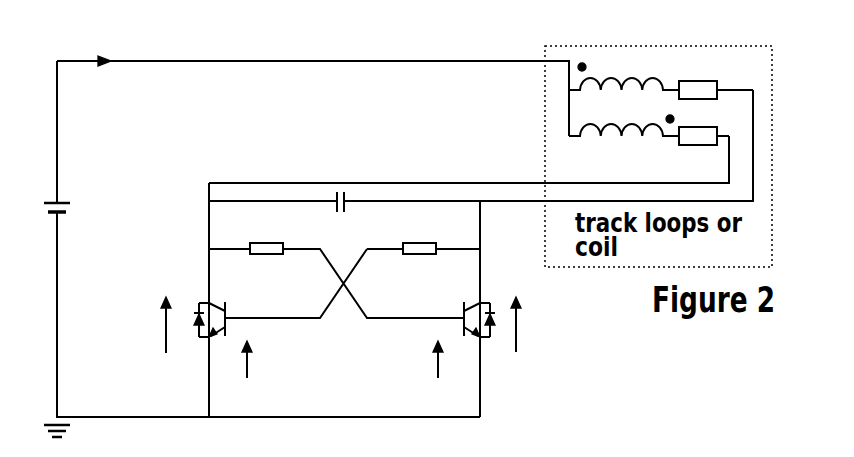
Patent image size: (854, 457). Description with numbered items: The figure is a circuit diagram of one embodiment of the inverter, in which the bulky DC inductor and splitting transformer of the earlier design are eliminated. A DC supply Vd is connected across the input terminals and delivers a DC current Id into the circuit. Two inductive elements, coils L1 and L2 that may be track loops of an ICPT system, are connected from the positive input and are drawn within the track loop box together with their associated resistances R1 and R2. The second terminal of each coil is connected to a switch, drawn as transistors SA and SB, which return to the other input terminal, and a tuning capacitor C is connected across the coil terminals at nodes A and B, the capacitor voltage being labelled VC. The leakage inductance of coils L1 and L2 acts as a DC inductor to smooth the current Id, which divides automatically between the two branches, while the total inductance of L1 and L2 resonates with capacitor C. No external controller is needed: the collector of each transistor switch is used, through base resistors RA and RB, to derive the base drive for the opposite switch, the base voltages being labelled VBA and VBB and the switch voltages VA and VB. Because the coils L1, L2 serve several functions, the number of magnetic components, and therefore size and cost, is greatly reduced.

The DC current Id is at (94, 42).
The supply Vd is at (73, 220).
The tuning capacitor C is at (328, 214).
The capacitor voltage VC is at (371, 224).
The base resistor RB is at (269, 231).
The base resistor RA is at (423, 230).
The node A is at (193, 216).
The node B is at (496, 225).
The switching transistor A SA is at (194, 355).
The switching transistor B SB is at (491, 355).
The voltage across switch A VA is at (149, 325).
The voltage across switch B VB is at (535, 324).
The base voltage of transistor A VBA is at (272, 364).
The base voltage of transistor B VBB is at (415, 362).
The coil L1 is at (624, 68).
The coil L2 is at (624, 148).
The track loop resistance 1 R1 is at (716, 73).
The track loop resistance 2 R2 is at (704, 154).